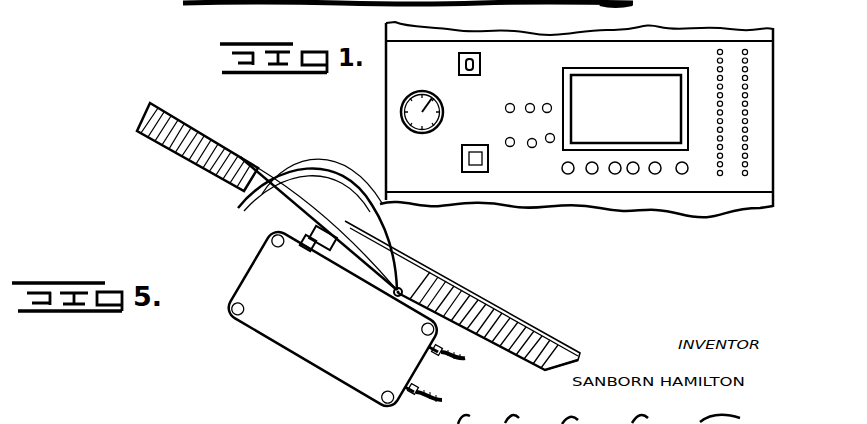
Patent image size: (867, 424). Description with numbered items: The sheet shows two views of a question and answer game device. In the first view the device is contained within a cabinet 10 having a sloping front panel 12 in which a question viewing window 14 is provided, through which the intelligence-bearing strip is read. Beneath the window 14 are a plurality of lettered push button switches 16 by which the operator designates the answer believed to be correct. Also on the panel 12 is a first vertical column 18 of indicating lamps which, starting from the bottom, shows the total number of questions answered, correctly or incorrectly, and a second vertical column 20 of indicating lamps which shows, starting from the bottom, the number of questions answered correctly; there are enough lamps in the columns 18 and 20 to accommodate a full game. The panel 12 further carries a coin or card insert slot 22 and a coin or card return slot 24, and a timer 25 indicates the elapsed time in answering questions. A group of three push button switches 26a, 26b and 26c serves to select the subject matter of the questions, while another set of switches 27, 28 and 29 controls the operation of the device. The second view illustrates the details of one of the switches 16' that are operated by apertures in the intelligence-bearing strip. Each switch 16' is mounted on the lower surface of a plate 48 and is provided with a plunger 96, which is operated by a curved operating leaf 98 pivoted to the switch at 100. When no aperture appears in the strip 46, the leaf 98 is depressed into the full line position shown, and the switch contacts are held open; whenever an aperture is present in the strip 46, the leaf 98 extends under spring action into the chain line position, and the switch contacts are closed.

In FIG. 1, the cabinet 10 is at (386, 92).
In FIG. 1, the sloping front panel 12 is at (482, 183).
In FIG. 1, the question viewing window 14 is at (654, 82).
In FIG. 1, the push button switches 16 is at (625, 198).
In FIG. 1, the first vertical column of indicating lamps 18 is at (709, 60).
In FIG. 1, the second vertical column of indicating lamps 20 is at (754, 60).
In FIG. 1, the coin or card insert slot 22 is at (481, 64).
In FIG. 1, the coin or card return slot 24 is at (461, 167).
In FIG. 1, the timer 25 is at (419, 90).
In FIG. 1, the push button switch 26a is at (506, 139).
In FIG. 1, the push button switch 26b is at (553, 134).
In FIG. 1, the push button switch 26c is at (532, 148).
In FIG. 1, the switch 27 is at (506, 104).
In FIG. 1, the switch 28 is at (530, 104).
In FIG. 1, the switch 29 is at (549, 104).
In FIG. 5, the switch 16' is at (339, 318).
In FIG. 5, the strip 46 is at (523, 323).
In FIG. 5, the plate 48 is at (502, 347).
In FIG. 5, the plunger 96 is at (337, 258).
In FIG. 5, the curved operating leaf 98 is at (357, 247).
In FIG. 5, the pivot 100 is at (397, 297).